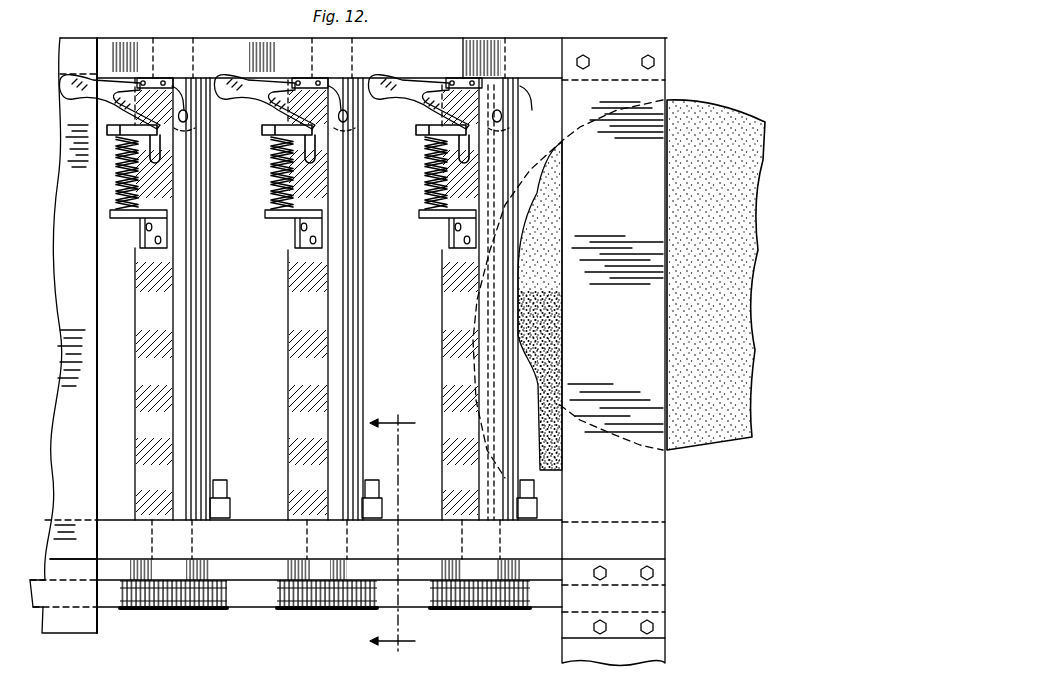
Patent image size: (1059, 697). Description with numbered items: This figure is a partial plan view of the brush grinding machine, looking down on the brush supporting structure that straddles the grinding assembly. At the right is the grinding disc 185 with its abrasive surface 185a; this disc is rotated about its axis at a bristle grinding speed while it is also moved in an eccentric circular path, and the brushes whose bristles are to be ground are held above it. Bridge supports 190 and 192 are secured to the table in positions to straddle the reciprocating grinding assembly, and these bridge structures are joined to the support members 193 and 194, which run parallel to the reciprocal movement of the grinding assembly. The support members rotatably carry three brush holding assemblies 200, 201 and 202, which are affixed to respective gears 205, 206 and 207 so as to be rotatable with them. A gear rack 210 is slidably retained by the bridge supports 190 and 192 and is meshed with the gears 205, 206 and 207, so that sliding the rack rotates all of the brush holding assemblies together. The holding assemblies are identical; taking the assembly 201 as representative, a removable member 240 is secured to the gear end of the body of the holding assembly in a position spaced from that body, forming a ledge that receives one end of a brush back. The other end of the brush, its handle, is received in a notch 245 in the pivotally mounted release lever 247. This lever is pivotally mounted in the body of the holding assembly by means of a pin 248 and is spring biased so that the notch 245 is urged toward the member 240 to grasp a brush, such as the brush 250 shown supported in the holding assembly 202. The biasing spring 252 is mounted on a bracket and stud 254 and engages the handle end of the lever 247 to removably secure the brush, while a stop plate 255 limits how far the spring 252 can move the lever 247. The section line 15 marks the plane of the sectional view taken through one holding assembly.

The section line 15- 15 is at (410, 414).
The grinding disc 185 is at (708, 452).
The abrasive surface 185a is at (722, 303).
The bridge support 190 is at (98, 418).
The bridge support 192 is at (669, 547).
The support member 193 is at (533, 44).
The support member 194 is at (415, 522).
The brush holding assembly 200 is at (214, 368).
The brush holding assembly 201 is at (369, 330).
The brush holding assembly 202 is at (441, 326).
The gear 205 is at (180, 612).
The gear 206 is at (302, 612).
The gear 207 is at (450, 612).
The gear rack 210 is at (257, 610).
The removable member 240 is at (226, 483).
The notch 245 is at (360, 97).
The release lever 247 is at (70, 97).
The pin 248 is at (185, 110).
The brush 250 is at (560, 155).
The spring 252 is at (115, 178).
The bracket and stud 254 is at (148, 248).
The stop plate 255 is at (303, 80).